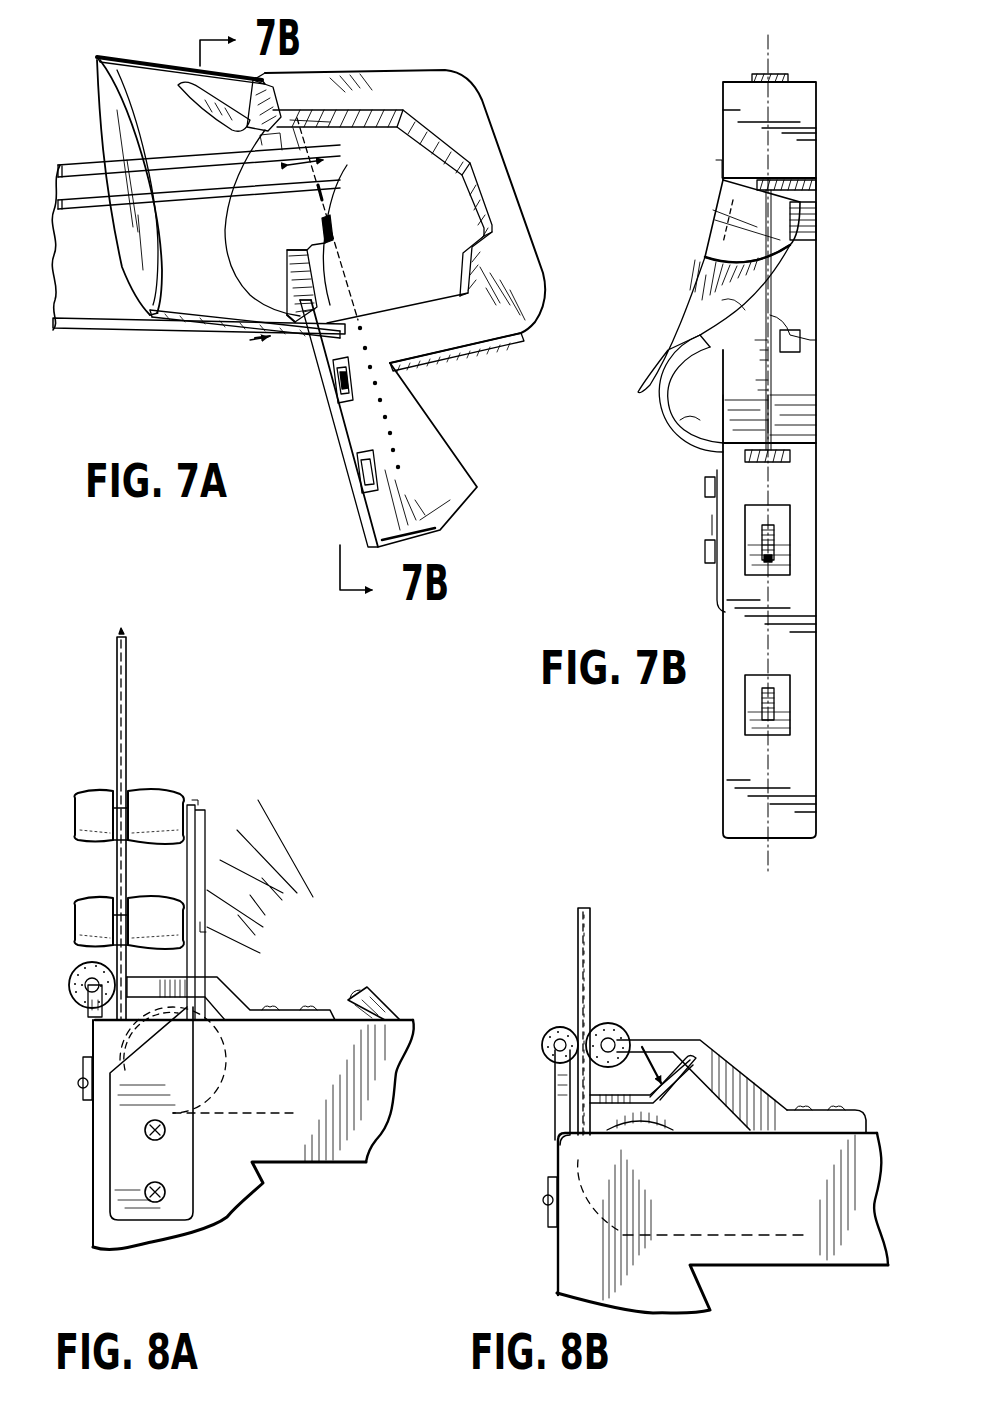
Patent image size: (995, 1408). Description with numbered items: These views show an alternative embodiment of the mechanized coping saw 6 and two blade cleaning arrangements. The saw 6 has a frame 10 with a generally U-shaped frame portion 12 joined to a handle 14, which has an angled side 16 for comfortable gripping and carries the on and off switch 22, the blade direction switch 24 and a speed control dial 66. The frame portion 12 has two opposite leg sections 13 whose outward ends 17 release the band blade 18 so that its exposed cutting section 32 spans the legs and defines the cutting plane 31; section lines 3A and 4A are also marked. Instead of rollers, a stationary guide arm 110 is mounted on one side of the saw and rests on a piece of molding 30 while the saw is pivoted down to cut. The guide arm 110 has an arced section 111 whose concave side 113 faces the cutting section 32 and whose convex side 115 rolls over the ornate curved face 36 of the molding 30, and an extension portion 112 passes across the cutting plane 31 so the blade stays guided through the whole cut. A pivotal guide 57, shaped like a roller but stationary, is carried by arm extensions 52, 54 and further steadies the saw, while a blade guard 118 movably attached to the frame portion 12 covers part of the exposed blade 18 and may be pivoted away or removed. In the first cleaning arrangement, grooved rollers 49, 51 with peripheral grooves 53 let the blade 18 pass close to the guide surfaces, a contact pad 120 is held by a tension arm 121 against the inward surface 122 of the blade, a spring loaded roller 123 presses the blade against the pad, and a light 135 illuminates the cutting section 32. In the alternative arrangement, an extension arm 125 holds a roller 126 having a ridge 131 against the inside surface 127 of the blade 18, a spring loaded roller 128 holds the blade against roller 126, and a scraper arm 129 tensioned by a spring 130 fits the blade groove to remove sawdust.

In FIG. 7A, the section line 3A is at (365, 170).
In FIG. 7A, the section line 4A is at (400, 440).
In FIG. 7A, the saw 6 is at (240, 406).
In FIG. 7B, the saw 6 is at (622, 572).
In FIG. 7A, the frame 10 is at (470, 408).
In FIG. 7B, the frame 10 is at (825, 540).
In FIG. 7A, the U-shaped frame portion 12 is at (515, 165).
In FIG. 7B, the U-shaped frame portion 12 is at (811, 262).
In FIG. 8A, the U-shaped frame portion 12 is at (355, 1172).
In FIG. 8B, the U-shaped frame portion 12 is at (800, 1268).
In FIG. 7A, the leg sections 13 is at (358, 74).
In FIG. 7B, the leg sections 13 is at (817, 98).
In FIG. 8A, the leg sections 13 is at (324, 1068).
In FIG. 8B, the leg sections 13 is at (789, 1173).
In FIG. 7A, the handle 14 is at (449, 435).
In FIG. 7B, the handle 14 is at (828, 662).
In FIG. 8A, the handle 14 is at (268, 1182).
In FIG. 8B, the handle 14 is at (708, 1298).
In FIG. 7A, the angled side 16 is at (418, 400).
In FIG. 7A, the outward ends 17 is at (262, 82).
In FIG. 7B, the outward ends 17 is at (795, 162).
In FIG. 8A, the outward ends 17 is at (88, 1128).
In FIG. 8B, the outward ends 17 is at (556, 1243).
In FIG. 7A, the band blade 18 is at (343, 254).
In FIG. 7B, the band blade 18 is at (775, 363).
In FIG. 8A, the band blade 18 is at (130, 720).
In FIG. 8B, the band blade 18 is at (597, 948).
In FIG. 7A, the on and off switch 22 is at (330, 398).
In FIG. 7B, the on and off switch 22 is at (798, 520).
In FIG. 7A, the blade direction switch 24 is at (360, 478).
In FIG. 7B, the blade direction switch 24 is at (795, 710).
In FIG. 7A, the piece of molding 30 is at (108, 335).
In FIG. 7A, the cutting plane 31 is at (348, 162).
In FIG. 7B, the cutting plane 31 is at (770, 868).
In FIG. 7A, the cutting section 32 is at (268, 223).
In FIG. 7B, the cutting section 32 is at (822, 180).
In FIG. 7A, the curved face 36 is at (106, 272).
In FIG. 8A, the roller 49 is at (180, 808).
In FIG. 8A, the roller 51 is at (102, 895).
In FIG. 7B, the arm extension 52 is at (783, 70).
In FIG. 8A, the peripheral grooves 53 is at (128, 812).
In FIG. 7B, the arm extension 54 is at (758, 465).
In FIG. 7A, the pivotal guide 57 is at (128, 32).
In FIG. 7A, the dial 66 is at (330, 380).
In FIG. 7B, the dial 66 is at (762, 545).
In FIG. 7A, the stationary guide arm 110 is at (250, 335).
In FIG. 7B, the stationary guide arm 110 is at (670, 450).
In FIG. 7A, the arced section 111 is at (278, 272).
In FIG. 7B, the arced section 111 is at (700, 382).
In FIG. 7A, the extension portion 112 is at (332, 228).
In FIG. 7B, the extension portion 112 is at (790, 335).
In FIG. 7A, the concave side 113 is at (325, 297).
In FIG. 7B, the concave side 113 is at (690, 417).
In FIG. 7A, the convex side 115 is at (290, 225).
In FIG. 7B, the convex side 115 is at (668, 400).
In FIG. 7A, the blade guard 118 is at (215, 118).
In FIG. 7B, the blade guard 118 is at (684, 326).
In FIG. 8A, the contact pad 120 is at (125, 972).
In FIG. 8A, the tension arm 121 is at (225, 990).
In FIG. 8A, the inward surface 122 is at (127, 900).
In FIG. 8A, the spring loaded roller 123 is at (68, 998).
In FIG. 8B, the extension arm 125 is at (733, 1070).
In FIG. 8B, the roller 126 is at (632, 1027).
In FIG. 8B, the inside surface 127 is at (592, 982).
In FIG. 8B, the spring loaded roller 128 is at (540, 1062).
In FIG. 8B, the scraper arm 129 is at (660, 1105).
In FIG. 8B, the spring 130 is at (672, 1040).
In FIG. 8B, the ridge 131 is at (597, 1022).
In FIG. 8A, the light 135 is at (382, 988).